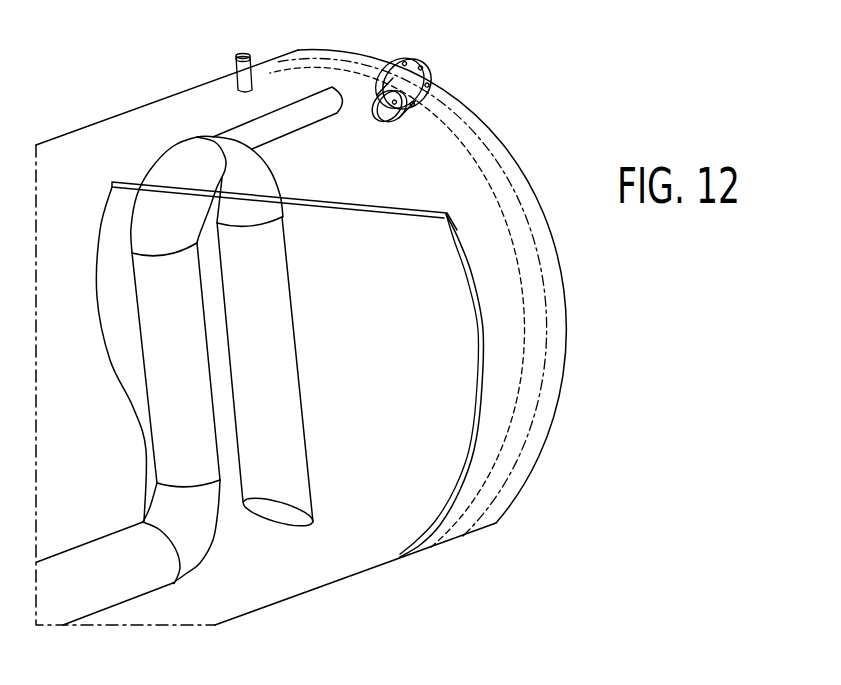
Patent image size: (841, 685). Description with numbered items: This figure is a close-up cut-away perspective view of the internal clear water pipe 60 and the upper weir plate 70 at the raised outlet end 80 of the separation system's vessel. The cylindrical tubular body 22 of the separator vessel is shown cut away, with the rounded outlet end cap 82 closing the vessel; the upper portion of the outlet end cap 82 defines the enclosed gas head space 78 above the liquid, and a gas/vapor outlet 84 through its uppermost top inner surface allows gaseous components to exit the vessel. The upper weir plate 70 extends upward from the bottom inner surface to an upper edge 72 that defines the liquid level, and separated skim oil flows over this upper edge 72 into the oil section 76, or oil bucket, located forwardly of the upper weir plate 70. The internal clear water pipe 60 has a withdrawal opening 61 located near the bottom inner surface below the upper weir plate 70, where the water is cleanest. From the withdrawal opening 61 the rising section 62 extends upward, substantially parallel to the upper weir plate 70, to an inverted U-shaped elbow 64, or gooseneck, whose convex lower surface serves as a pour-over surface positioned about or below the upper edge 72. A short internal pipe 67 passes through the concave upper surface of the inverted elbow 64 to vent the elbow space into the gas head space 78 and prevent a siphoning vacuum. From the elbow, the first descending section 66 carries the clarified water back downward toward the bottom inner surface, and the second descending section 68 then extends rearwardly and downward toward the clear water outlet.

The cylindrical tubular body 22 is at (137, 108).
The internal clear water pipe 60 is at (138, 511).
The withdrawal opening 61 is at (267, 513).
The rising section 62 is at (288, 377).
The inverted U-shaped elbow 64 is at (192, 204).
The first descending section 66 is at (157, 388).
The short internal pipe 67 is at (295, 95).
The second descending section 68 is at (130, 582).
The upper weir plate 70 is at (110, 297).
The upper edge 72 is at (362, 207).
The oil section 76 is at (498, 433).
The enclosed gas head space 78 is at (377, 167).
The raised outlet end 80 is at (533, 115).
The outlet end cap 82 is at (558, 409).
The gas/vapor outlet 84 is at (408, 63).